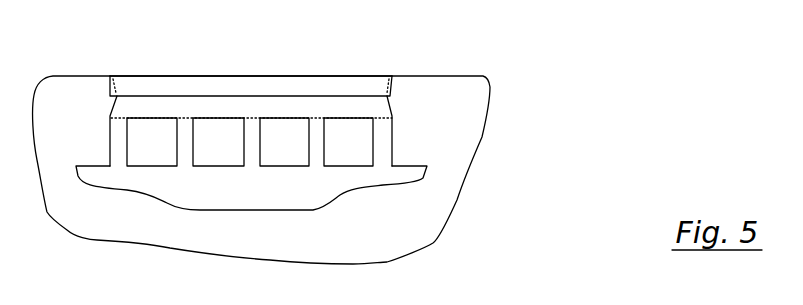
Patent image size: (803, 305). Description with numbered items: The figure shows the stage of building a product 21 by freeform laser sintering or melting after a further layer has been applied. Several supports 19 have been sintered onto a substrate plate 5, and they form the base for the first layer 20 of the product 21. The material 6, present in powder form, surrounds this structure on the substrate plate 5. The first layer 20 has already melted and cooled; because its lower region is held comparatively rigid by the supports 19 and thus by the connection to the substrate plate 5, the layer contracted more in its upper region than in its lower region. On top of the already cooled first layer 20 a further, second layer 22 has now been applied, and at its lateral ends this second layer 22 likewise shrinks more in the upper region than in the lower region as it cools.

The substrate plate 5 is at (259, 196).
The material 6 is at (82, 142).
The supports 19 is at (121, 157).
The first layer 20 is at (333, 103).
The product 21 is at (233, 77).
The second layer 22 is at (299, 81).